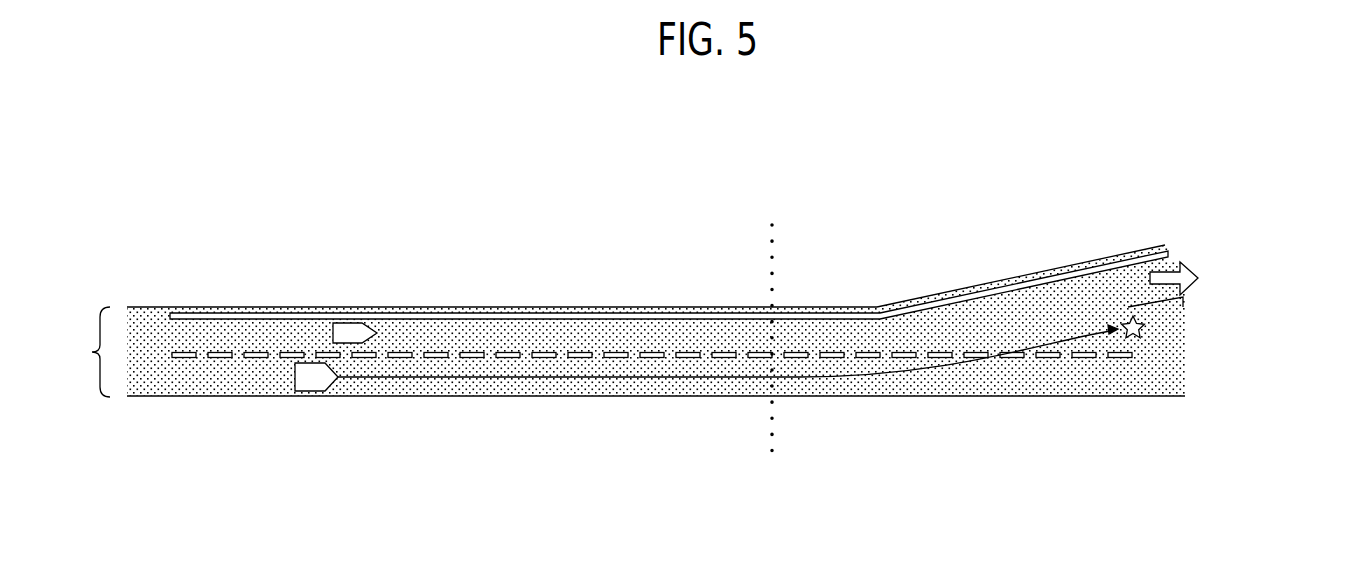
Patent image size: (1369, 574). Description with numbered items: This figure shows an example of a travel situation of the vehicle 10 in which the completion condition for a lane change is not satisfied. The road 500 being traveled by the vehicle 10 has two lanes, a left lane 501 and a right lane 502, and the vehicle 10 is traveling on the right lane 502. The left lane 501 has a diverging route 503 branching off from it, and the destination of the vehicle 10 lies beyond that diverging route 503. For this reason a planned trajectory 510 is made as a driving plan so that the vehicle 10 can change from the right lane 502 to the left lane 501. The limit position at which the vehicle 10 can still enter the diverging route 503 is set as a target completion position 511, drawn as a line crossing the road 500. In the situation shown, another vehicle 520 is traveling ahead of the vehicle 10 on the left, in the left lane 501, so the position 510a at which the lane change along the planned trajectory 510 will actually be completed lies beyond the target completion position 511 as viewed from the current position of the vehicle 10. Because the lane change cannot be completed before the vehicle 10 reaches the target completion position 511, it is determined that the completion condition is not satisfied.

The road 500 is at (461, 352).
The left lane 501 is at (180, 322).
The right lane 502 is at (187, 388).
The diverging route 503 is at (1063, 287).
The planned trajectory 510 is at (590, 378).
The lane change completion position 510a is at (1133, 340).
The target completion position 511 is at (770, 420).
The another vehicle 520 is at (345, 320).
The vehicle 10 is at (310, 382).